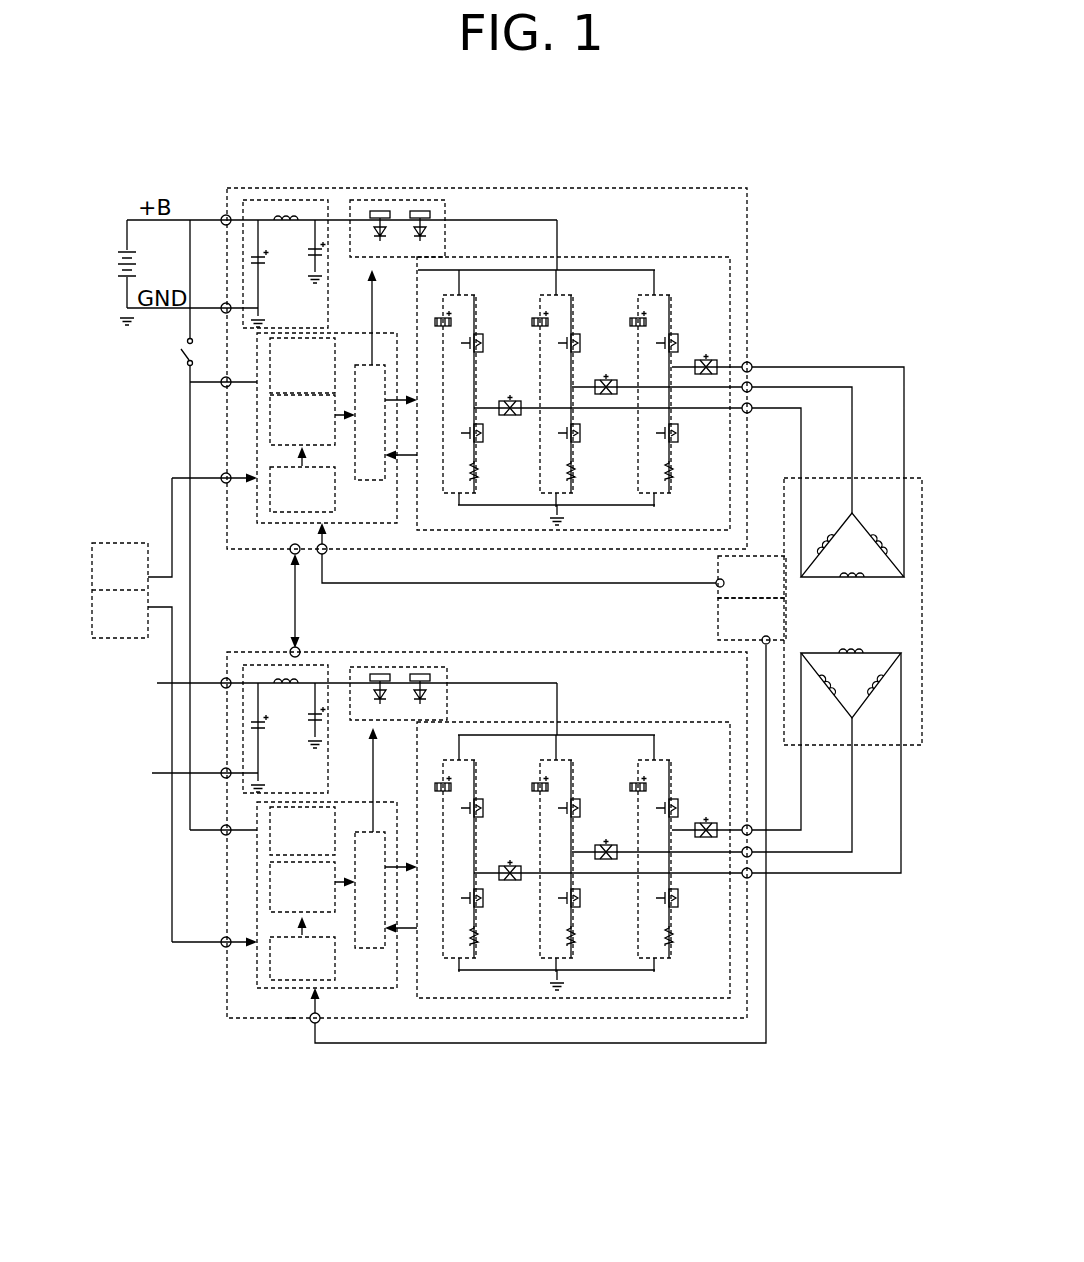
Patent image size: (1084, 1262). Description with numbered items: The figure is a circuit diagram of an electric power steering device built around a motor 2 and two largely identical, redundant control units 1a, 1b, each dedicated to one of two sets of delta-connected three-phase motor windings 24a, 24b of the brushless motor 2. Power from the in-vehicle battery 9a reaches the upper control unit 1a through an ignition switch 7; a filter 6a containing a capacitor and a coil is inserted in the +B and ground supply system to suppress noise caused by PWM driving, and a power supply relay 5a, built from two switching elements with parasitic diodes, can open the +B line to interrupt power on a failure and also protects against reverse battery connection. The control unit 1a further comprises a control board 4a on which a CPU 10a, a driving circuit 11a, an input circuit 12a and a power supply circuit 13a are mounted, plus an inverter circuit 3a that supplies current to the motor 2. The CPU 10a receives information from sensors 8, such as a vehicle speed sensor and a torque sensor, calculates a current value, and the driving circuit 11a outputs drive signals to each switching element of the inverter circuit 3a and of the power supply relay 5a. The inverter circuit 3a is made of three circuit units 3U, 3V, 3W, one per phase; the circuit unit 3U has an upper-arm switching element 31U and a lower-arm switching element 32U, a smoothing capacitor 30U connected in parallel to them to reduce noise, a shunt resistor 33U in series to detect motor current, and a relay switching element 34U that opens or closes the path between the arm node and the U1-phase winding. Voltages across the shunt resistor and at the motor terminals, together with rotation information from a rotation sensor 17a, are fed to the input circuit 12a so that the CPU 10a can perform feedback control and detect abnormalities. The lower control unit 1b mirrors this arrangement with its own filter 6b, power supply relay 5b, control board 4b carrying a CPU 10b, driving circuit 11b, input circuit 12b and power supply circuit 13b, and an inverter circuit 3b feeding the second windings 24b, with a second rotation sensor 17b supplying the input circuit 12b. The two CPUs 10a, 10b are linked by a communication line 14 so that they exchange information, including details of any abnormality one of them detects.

The control unit 1a is at (575, 188).
The control unit 1b is at (616, 1020).
The motor 2 is at (854, 569).
The inverter circuit 3a is at (561, 424).
The inverter circuit 3b is at (573, 721).
The circuit unit 3U is at (459, 378).
The circuit unit 3V is at (561, 293).
The circuit unit 3W is at (657, 293).
The smoothing capacitor 30U is at (437, 314).
The upper-arm switching element 31U is at (468, 332).
The lower-arm switching element 32U is at (484, 440).
The shunt resistor 33U is at (480, 484).
The relay switching element 34U is at (508, 399).
The control board 4a is at (293, 582).
The control board 4b is at (290, 1020).
The power supply relay 5a is at (410, 200).
The power supply relay 5b is at (400, 668).
The filter 6a is at (262, 200).
The filter 6b is at (243, 713).
The ignition switch 7 is at (183, 353).
The sensors 8 is at (107, 640).
The battery 9a is at (126, 250).
The CPU 10a is at (421, 430).
The CPU 10b is at (440, 874).
The driving circuit 11a is at (363, 481).
The driving circuit 11b is at (358, 951).
The input circuit 12a is at (263, 508).
The input circuit 12b is at (264, 950).
The power supply circuit 13a is at (326, 338).
The power supply circuit 13b is at (328, 806).
The communication line 14 is at (294, 607).
The rotation sensor 17a is at (717, 562).
The rotation sensor 17b is at (717, 608).
The motor windings 24a is at (882, 541).
The motor windings 24b is at (882, 687).